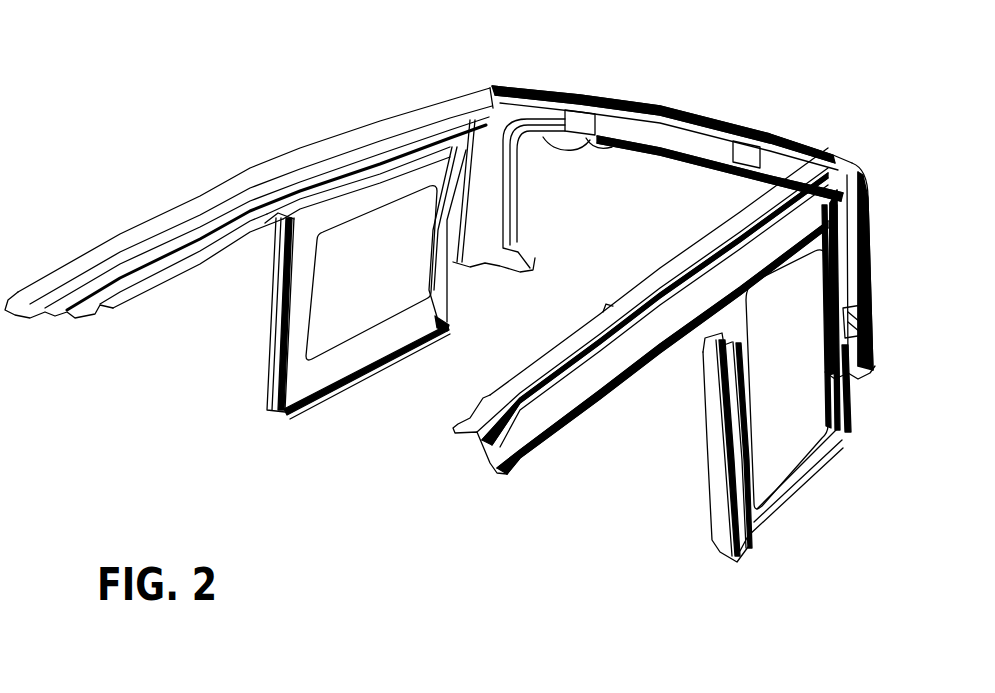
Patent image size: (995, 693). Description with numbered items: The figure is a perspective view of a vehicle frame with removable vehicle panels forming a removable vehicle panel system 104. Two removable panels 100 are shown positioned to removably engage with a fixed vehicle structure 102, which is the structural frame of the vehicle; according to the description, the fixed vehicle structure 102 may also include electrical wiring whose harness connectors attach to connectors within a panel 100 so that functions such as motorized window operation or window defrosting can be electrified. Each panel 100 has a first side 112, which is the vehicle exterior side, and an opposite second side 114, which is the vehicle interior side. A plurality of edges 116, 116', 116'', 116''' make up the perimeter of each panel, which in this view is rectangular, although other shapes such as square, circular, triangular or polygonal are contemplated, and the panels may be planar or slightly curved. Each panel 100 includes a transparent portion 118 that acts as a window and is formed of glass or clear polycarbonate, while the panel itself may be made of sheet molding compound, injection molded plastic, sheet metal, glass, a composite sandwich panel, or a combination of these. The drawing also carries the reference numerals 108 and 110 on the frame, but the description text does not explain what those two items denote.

The removable panel 100 is at (268, 411).
The fixed vehicle structure 102 is at (838, 183).
The removable vehicle panel system 104 is at (775, 62).
The hinge 108 is at (597, 140).
The latch 110 is at (862, 323).
The first side 112 is at (753, 530).
The second side 114 is at (298, 387).
The edge 116 is at (580, 423).
The edge 116' is at (476, 387).
The edge 116'' is at (593, 261).
The edge 116''' is at (478, 239).
The transparent portion 118 is at (374, 283).